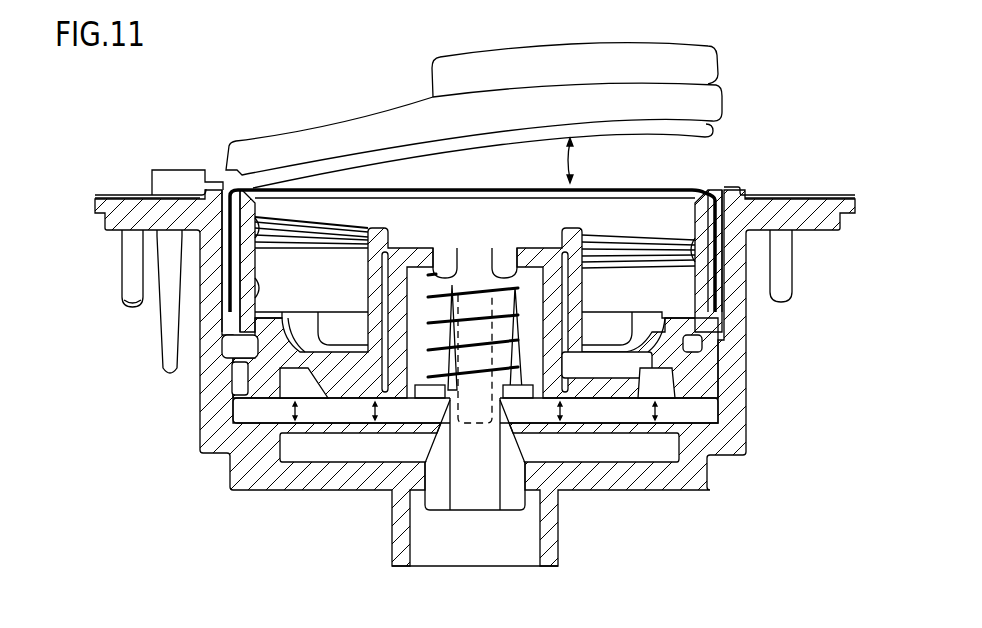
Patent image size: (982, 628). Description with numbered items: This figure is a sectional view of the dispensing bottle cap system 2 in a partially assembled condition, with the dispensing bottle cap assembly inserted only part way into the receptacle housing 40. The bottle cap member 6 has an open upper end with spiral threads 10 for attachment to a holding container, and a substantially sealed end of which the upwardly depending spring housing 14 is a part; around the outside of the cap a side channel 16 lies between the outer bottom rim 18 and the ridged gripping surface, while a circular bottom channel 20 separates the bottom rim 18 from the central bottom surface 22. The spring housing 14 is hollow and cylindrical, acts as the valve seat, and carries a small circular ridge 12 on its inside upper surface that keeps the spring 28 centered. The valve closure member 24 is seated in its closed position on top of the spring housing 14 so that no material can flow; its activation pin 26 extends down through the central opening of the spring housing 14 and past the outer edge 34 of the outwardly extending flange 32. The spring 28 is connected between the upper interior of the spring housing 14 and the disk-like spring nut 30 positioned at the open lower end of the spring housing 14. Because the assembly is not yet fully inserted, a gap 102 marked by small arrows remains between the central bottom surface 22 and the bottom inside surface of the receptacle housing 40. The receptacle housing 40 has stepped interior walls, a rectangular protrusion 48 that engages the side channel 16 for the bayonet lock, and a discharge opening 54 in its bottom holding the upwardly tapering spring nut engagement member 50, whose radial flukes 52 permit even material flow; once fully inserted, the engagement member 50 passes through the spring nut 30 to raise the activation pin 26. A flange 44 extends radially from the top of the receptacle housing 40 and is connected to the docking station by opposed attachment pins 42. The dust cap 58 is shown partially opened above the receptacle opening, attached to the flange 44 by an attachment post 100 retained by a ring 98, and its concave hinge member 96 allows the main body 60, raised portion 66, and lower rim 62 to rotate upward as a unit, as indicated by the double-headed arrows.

The bottle cap system 2 is at (766, 93).
The bottle cap member 6 is at (213, 425).
The spiral threads 10 is at (358, 212).
The circular ridge 12 is at (445, 265).
The spring housing 14 is at (233, 492).
The side channel 16 is at (717, 340).
The outer bottom rim 18 is at (697, 381).
The circular bottom channel 20 is at (232, 457).
The central bottom surface 22 is at (683, 490).
The valve closure member 24 is at (567, 242).
The activation pin 26 is at (473, 410).
The spring 28 is at (372, 465).
The spring nut 30 is at (575, 466).
The flange 32 is at (338, 343).
The outer edge 34 is at (312, 333).
The receptacle housing 40 is at (712, 443).
The attachment pins 42 is at (147, 240).
The flange 44 is at (133, 193).
The rectangular protrusion 48 is at (695, 347).
The spring nut engagement member 50 is at (395, 558).
The flukes 52 is at (513, 490).
The discharge opening 54 is at (507, 543).
The dust cap 58 is at (262, 81).
The main body 60 is at (415, 122).
The lower rim 62 is at (680, 128).
The raised portion 66 is at (600, 58).
The concave hinge member 96 is at (213, 172).
The ring 98 is at (128, 277).
The attachment post 100 is at (168, 347).
The gap 102 is at (335, 420).